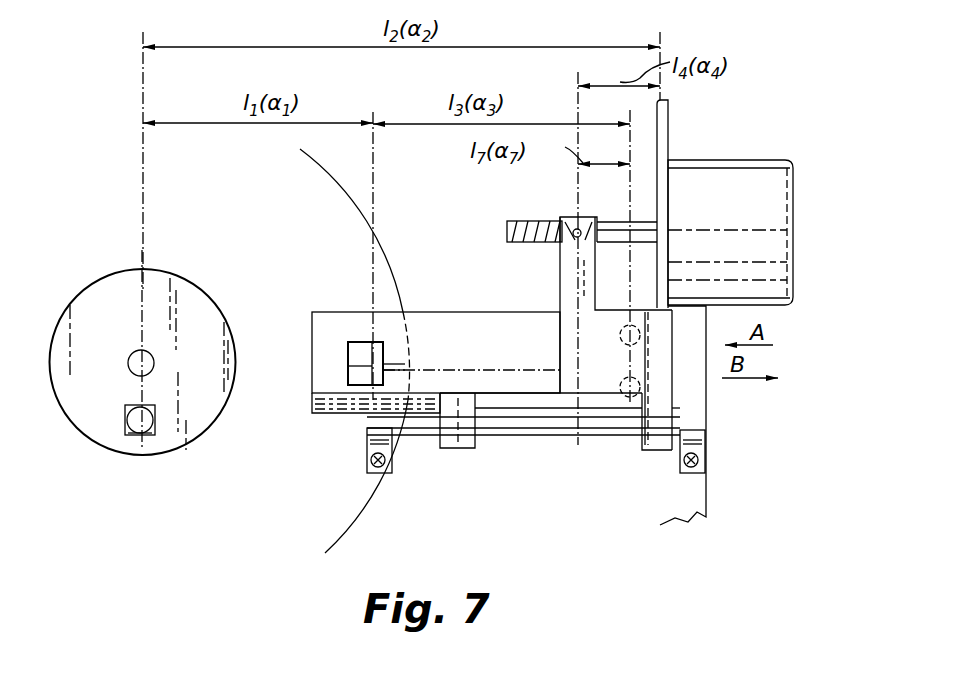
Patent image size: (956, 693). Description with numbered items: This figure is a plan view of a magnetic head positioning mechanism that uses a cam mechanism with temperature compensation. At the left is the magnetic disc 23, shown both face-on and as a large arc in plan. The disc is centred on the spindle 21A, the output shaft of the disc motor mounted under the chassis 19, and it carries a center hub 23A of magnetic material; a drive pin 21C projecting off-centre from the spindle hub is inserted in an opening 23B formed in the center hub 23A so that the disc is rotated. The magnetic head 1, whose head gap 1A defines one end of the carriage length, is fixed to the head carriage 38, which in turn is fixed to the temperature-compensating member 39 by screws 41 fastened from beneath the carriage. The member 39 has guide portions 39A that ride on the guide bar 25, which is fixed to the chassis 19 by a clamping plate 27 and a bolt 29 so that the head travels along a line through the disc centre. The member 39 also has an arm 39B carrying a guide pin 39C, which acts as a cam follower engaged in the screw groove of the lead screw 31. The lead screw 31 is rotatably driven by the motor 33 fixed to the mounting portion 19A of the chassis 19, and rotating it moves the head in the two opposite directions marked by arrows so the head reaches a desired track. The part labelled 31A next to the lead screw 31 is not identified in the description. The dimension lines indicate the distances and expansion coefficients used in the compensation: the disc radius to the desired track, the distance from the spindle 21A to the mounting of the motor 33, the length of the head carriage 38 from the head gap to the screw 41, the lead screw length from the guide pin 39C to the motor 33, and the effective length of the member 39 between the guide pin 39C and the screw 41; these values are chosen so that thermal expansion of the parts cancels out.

The magnetic head 1 is at (357, 342).
The head gap 1A is at (348, 367).
The chassis 19 is at (690, 522).
The mounting portion 19A is at (662, 168).
The spindle 21A is at (150, 360).
The drive pin 21C is at (126, 416).
The magnetic disc 23 is at (350, 523).
The center hub 23A is at (210, 312).
The opening 23B is at (150, 432).
The guide bar 25 is at (527, 436).
The plate 27 is at (367, 437).
The bolt 29 is at (372, 462).
The lead screw 31 is at (507, 230).
The screw shaft 31A is at (548, 222).
The motor 33 is at (733, 185).
The head carriage 38 is at (452, 312).
The temperature-compensating member 39 is at (570, 335).
The guide portions 39A is at (457, 450).
The arm 39B is at (518, 268).
The guide pin 39C is at (580, 218).
The screws 41 is at (620, 338).